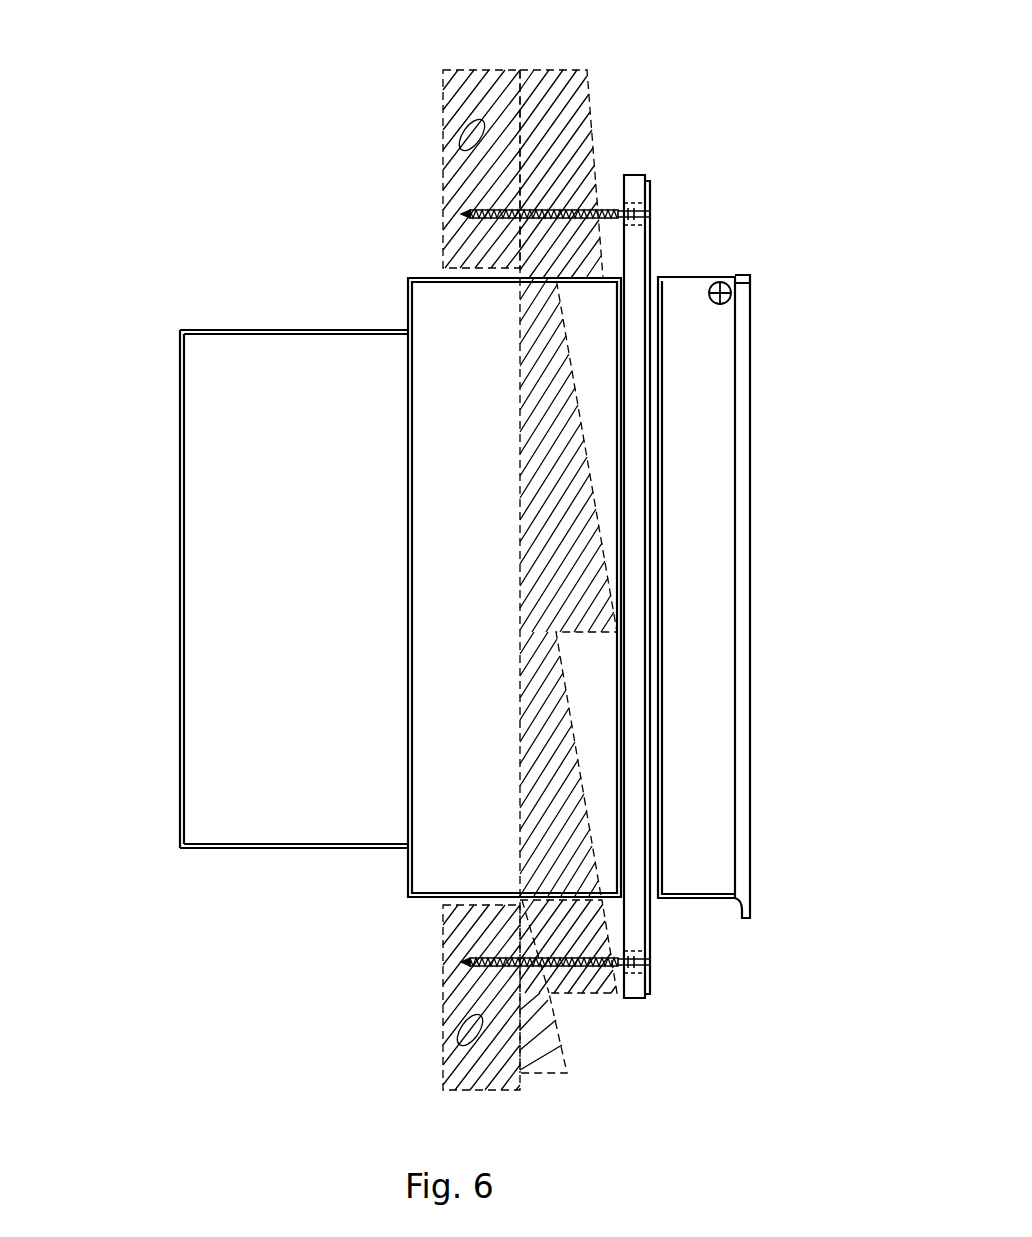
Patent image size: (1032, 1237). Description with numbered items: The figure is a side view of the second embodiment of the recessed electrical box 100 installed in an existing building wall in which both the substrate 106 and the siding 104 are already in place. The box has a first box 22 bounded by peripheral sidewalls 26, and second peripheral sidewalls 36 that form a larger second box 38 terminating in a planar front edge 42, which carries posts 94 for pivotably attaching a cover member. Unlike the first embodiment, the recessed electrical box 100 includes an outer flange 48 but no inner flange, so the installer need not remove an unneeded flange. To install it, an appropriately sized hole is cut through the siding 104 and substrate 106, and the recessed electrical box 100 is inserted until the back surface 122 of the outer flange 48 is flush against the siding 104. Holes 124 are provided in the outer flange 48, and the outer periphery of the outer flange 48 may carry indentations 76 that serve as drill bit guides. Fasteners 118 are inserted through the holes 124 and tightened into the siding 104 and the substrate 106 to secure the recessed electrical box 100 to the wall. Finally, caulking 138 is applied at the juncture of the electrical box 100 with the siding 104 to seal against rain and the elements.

The recessed electrical box 100 is at (324, 266).
The first box 22 is at (312, 509).
The peripheral sidewalls 26 is at (236, 568).
The second peripheral sidewalls 36 is at (453, 828).
The second box 38 is at (477, 457).
The planar front edge 42 is at (750, 585).
The outer flange 48 is at (646, 182).
The indentations 76 is at (645, 222).
The posts 94 is at (726, 288).
The siding 104 is at (556, 100).
The substrate 106 is at (470, 181).
The fasteners 118 is at (582, 207).
The back surface 122 is at (621, 692).
The holes 124 is at (647, 223).
The caulking 138 is at (635, 187).